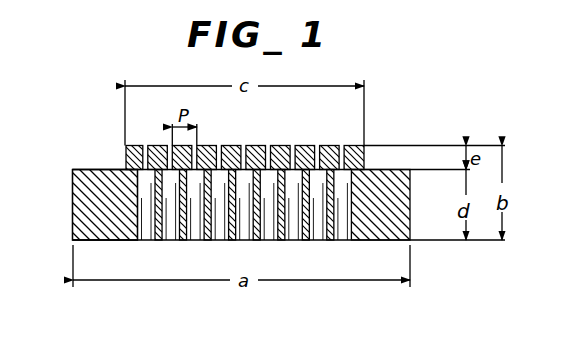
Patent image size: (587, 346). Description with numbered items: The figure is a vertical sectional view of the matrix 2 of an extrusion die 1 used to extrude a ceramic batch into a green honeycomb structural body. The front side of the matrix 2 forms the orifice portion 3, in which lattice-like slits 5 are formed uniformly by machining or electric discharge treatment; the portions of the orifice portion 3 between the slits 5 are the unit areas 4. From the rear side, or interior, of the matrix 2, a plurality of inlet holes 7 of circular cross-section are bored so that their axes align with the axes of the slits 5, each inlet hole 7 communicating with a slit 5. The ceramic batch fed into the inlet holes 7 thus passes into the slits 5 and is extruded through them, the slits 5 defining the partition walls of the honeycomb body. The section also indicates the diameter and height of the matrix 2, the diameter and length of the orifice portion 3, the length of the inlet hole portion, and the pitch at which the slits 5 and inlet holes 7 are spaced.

The extrusion die 1 is at (206, 205).
The matrix of the die 2 is at (78, 188).
The orifice portion 3 is at (353, 157).
The unit area of the orifice portion 4 is at (330, 146).
The slit 5 is at (246, 146).
The inlet hole 7 is at (290, 241).